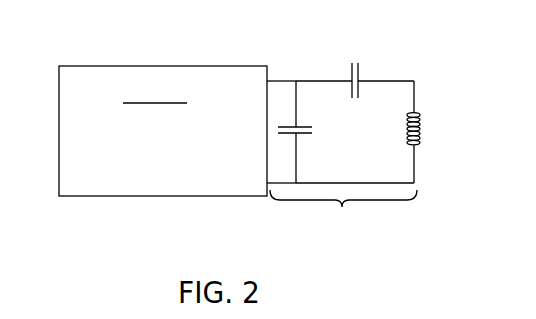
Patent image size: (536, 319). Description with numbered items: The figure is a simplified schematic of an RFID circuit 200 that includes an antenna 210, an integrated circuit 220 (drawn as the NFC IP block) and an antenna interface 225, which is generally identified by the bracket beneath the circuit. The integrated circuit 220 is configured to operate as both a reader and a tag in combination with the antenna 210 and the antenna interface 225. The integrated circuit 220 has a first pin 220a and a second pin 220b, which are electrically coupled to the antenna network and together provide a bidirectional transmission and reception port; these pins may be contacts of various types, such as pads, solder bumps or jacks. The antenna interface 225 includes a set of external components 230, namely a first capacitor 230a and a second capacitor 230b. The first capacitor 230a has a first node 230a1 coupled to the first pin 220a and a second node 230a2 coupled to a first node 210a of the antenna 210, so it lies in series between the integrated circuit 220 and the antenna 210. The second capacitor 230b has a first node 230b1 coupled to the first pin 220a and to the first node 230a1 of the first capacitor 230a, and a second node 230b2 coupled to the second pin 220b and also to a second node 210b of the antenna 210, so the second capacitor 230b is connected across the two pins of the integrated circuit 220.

The RFID circuit 200 is at (257, 154).
The antenna 210 is at (424, 134).
The first node of antenna 210a is at (473, 100).
The second node of antenna 210b is at (473, 156).
The integrated circuit 220 is at (80, 197).
The first pin 220a is at (267, 82).
The second pin 220b is at (267, 183).
The antenna interface 225 is at (343, 208).
The set of external components 230 is at (360, 103).
The first capacitor 230a is at (362, 55).
The first node of first capacitor 230a1 is at (337, 80).
The second node of first capacitor 230a2 is at (443, 76).
The second capacitor 230b is at (364, 148).
The first node of second capacitor 230b1 is at (350, 116).
The second node of second capacitor 230b2 is at (350, 175).